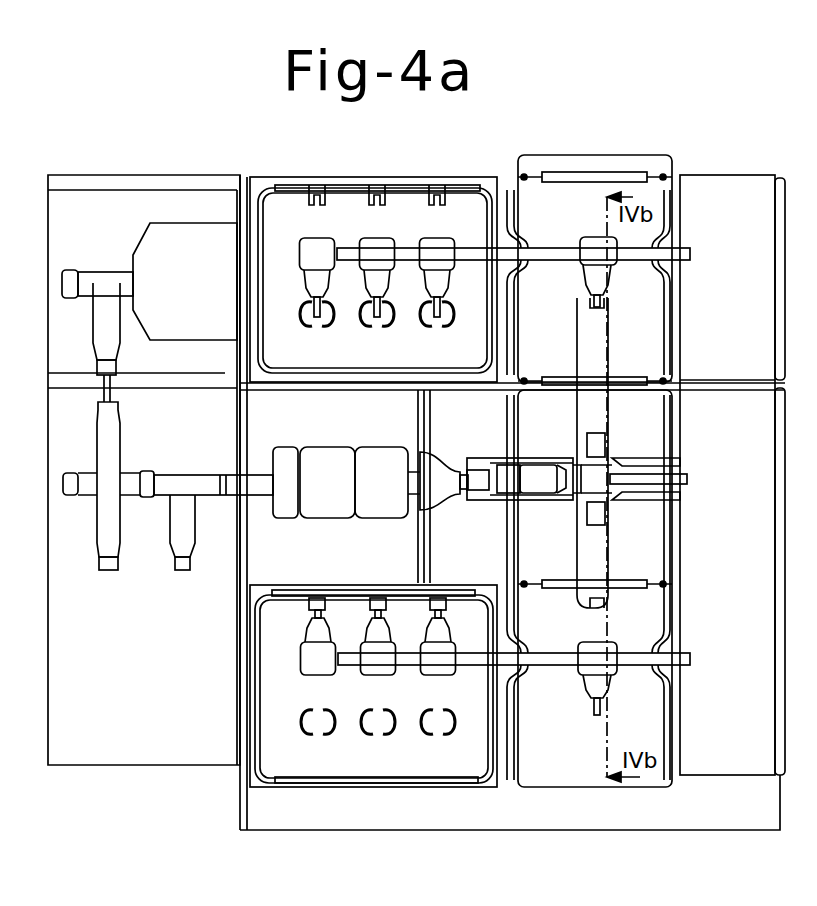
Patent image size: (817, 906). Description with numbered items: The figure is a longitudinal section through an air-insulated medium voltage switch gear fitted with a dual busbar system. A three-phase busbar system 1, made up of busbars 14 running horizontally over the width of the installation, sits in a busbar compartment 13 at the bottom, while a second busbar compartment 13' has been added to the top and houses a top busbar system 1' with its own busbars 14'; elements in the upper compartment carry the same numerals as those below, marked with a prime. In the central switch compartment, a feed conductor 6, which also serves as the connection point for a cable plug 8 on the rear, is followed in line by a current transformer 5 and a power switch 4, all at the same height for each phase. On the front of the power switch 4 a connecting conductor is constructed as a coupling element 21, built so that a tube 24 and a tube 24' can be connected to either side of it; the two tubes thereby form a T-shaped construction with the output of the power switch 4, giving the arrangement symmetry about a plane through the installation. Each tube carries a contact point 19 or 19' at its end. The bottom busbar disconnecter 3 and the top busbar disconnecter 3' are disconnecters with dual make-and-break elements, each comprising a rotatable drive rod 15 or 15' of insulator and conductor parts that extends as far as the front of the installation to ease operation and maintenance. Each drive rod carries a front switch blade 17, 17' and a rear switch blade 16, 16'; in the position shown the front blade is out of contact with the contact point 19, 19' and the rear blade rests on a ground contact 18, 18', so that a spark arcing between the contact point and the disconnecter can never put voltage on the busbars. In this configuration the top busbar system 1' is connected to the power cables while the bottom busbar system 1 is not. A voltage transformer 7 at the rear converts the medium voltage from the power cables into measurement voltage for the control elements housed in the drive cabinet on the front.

The busbar system 1 is at (345, 704).
The top busbar system 1' is at (373, 255).
The busbar disconnecter 3 is at (595, 629).
The busbar disconnecter 3' is at (568, 256).
The power switch 4 is at (577, 466).
The current transformer 5 is at (338, 467).
The feed conductor 6 is at (210, 480).
The voltage transformer 7 is at (184, 238).
The cable plug 8 is at (183, 563).
The busbar compartment 13 is at (375, 730).
The second busbar compartment 13' is at (377, 159).
The busbar 14 is at (378, 739).
The busbar 14' is at (396, 330).
The drive rod 15 is at (586, 656).
The drive rod 15' is at (588, 250).
The rear switch blade 16 is at (395, 641).
The rear switch blade 16' is at (396, 277).
The front switch blade 17 is at (576, 706).
The front switch blade 17' is at (628, 286).
The ground contact 18 is at (377, 615).
The ground contact 18' is at (377, 166).
The contact point 19 is at (620, 614).
The contact point 19' is at (625, 320).
The coupling element 21 is at (610, 492).
The tube 24 is at (619, 529).
The tube 24' is at (622, 374).